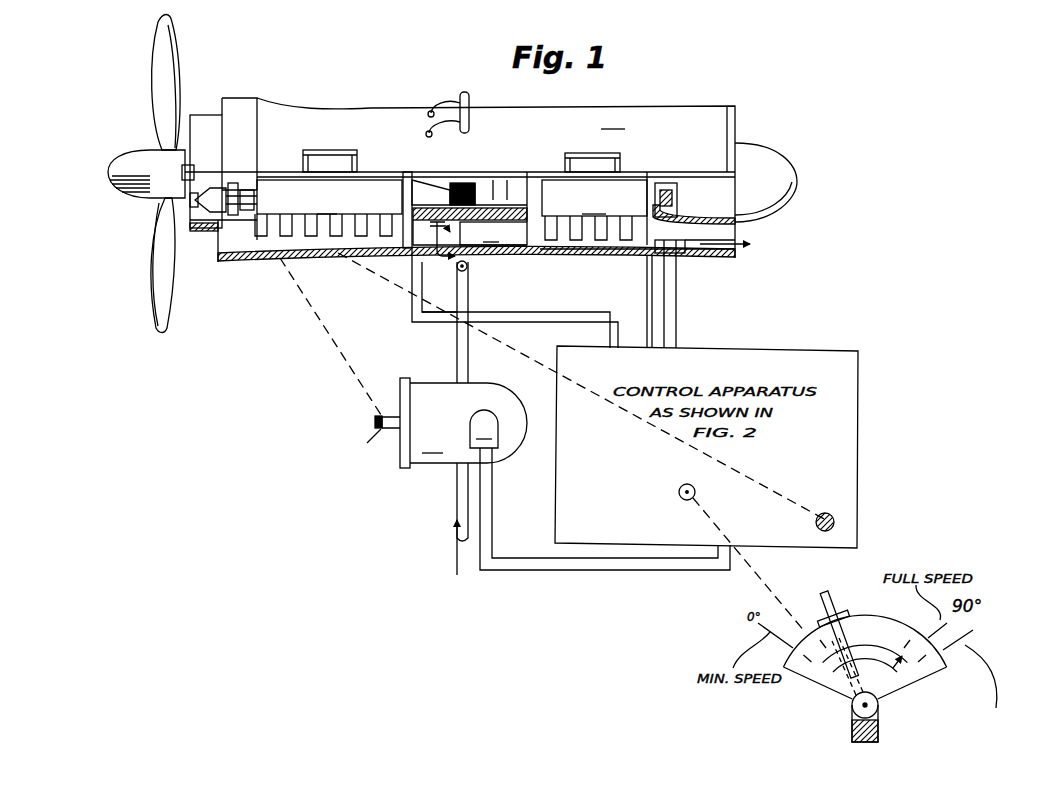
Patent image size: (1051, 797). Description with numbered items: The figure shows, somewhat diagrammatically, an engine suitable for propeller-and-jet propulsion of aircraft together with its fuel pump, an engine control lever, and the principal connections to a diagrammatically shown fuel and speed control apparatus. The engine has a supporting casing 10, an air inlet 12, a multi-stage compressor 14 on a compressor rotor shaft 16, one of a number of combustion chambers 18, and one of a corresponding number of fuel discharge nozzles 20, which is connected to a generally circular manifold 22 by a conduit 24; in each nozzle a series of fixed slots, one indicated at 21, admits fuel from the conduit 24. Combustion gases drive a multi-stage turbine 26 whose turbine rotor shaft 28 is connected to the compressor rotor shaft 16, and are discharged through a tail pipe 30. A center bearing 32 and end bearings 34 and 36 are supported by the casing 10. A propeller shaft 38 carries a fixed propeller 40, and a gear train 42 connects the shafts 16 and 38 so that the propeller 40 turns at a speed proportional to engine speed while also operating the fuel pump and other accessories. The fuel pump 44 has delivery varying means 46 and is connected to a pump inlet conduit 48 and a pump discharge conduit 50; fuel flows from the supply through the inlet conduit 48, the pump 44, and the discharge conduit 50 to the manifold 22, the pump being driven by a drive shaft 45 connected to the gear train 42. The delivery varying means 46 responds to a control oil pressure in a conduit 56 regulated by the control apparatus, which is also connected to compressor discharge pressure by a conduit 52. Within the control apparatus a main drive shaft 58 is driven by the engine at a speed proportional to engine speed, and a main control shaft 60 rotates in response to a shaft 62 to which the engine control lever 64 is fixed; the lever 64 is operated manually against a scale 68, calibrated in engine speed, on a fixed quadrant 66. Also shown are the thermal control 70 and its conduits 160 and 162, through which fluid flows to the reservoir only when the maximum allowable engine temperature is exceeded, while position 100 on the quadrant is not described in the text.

The supporting casing 10 is at (491, 163).
The air inlet 12 is at (195, 239).
The multi-stage compressor 14 is at (313, 251).
The compressor rotor shaft 16 is at (328, 210).
The combustion chamber 18 is at (470, 208).
The fuel discharge nozzle 20 is at (452, 300).
The fixed slot 21 is at (426, 210).
The manifold 22 is at (469, 98).
The conduit 24 is at (439, 257).
The multi-stage turbine 26 is at (593, 263).
The turbine rotor shaft 28 is at (594, 208).
The tail pipe 30 is at (736, 256).
The center bearing 32 is at (466, 184).
The end bearing 34 is at (240, 202).
The end bearing 36 is at (660, 184).
The propeller shaft 38 is at (183, 146).
The propeller 40 is at (118, 222).
The gear train 42 is at (224, 186).
The fuel pump 44 is at (463, 423).
The drive shaft 45 is at (375, 425).
The delivery varying means 46 is at (484, 429).
The pump inlet conduit 48 is at (458, 487).
The pump discharge conduit 50 is at (470, 291).
The conduit 52 is at (412, 300).
The conduit 56 is at (486, 503).
The main drive shaft 58 is at (822, 512).
The main control shaft 60 is at (679, 492).
The shaft 62 is at (879, 709).
The engine control lever 64 is at (823, 592).
The fixed quadrant 66 is at (940, 676).
The scale 68 is at (866, 620).
The thermal control 70 is at (682, 246).
The maximum power position 100 is at (978, 684).
The conduit 160 is at (678, 300).
The conduit 162 is at (647, 301).